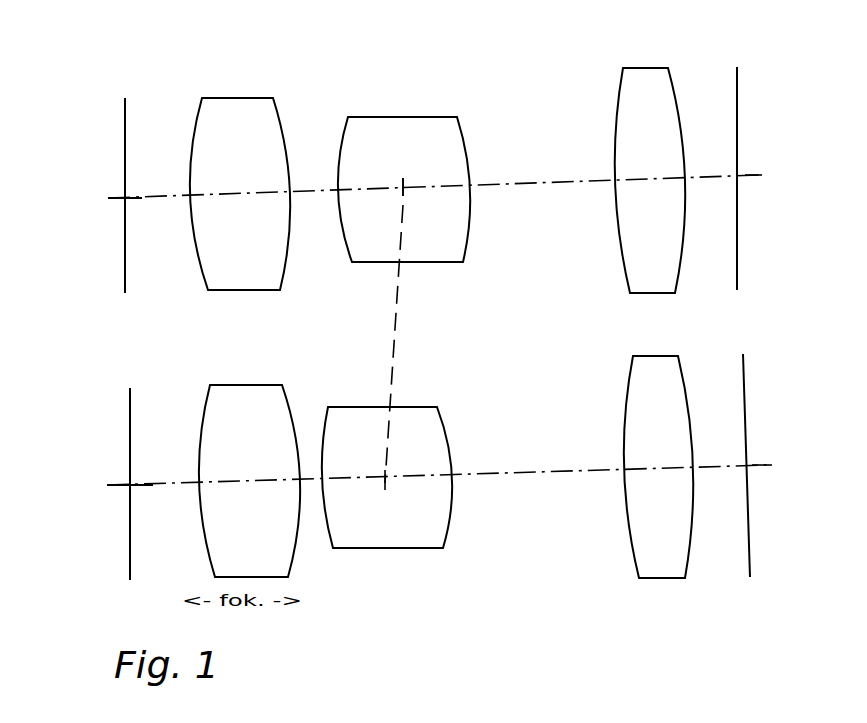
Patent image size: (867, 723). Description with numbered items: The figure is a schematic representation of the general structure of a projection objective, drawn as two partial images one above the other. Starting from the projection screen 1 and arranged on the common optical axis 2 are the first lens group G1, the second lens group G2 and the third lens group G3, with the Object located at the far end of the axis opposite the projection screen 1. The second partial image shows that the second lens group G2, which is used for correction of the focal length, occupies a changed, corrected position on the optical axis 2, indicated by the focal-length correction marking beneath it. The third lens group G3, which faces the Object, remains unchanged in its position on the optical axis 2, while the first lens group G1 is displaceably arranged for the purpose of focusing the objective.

The projection screen 1 is at (125, 127).
The common optical axis 2 is at (760, 175).
The first lens group G1 is at (238, 98).
The second lens group G2 is at (407, 117).
The third lens group G3 is at (640, 68).
The object Object is at (737, 92).